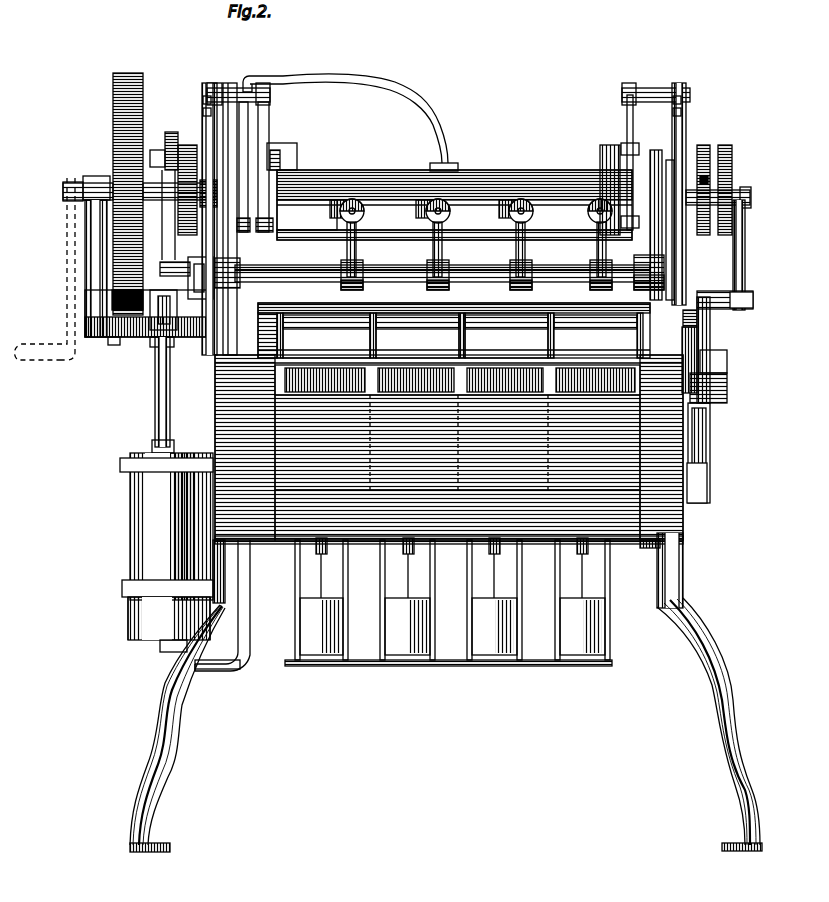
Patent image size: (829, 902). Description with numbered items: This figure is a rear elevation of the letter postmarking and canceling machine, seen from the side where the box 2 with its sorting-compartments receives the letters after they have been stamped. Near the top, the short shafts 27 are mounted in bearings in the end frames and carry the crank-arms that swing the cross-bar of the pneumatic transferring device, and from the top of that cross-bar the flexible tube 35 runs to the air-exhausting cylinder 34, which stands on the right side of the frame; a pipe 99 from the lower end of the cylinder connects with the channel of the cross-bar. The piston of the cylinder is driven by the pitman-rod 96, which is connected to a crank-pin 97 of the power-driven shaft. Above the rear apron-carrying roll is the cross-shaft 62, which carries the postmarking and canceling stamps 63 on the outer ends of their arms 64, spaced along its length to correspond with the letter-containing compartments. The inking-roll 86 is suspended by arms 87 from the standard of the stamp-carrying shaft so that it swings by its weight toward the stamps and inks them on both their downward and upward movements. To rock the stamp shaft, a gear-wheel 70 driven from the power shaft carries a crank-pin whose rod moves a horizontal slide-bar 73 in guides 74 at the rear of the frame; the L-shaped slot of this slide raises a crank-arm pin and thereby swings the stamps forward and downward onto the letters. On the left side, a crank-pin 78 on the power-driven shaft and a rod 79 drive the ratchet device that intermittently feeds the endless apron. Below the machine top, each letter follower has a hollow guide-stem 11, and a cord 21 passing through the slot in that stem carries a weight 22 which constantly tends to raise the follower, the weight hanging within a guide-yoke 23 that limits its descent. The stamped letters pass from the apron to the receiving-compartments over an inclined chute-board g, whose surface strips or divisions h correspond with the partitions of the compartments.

The box 2 is at (457, 442).
The hollow guide-stem 11 is at (459, 546).
The cord 21 is at (450, 576).
The weight 22 is at (452, 626).
The guide-yoke 23 is at (454, 600).
The short shafts 27 is at (480, 172).
The air-exhausting cylinder 34 is at (159, 552).
The flexible tube 35 is at (326, 364).
The cross-shaft 62 is at (439, 268).
The postmarking and canceling stamps 63 is at (471, 214).
The arms 64 is at (486, 249).
The gear-wheel 70 is at (197, 190).
The slide-bar 73 is at (192, 278).
The guides 74 is at (186, 269).
The crank-pin 78 is at (719, 190).
The rod 79 is at (747, 255).
The inking-roll 86 is at (330, 222).
The arms 87 is at (645, 159).
The pitman-rod 96 is at (157, 395).
The crank-pin 97 is at (161, 196).
The pipe 99 is at (217, 674).
The inclined chute-board g is at (326, 335).
The surface strips or divisions h is at (462, 335).